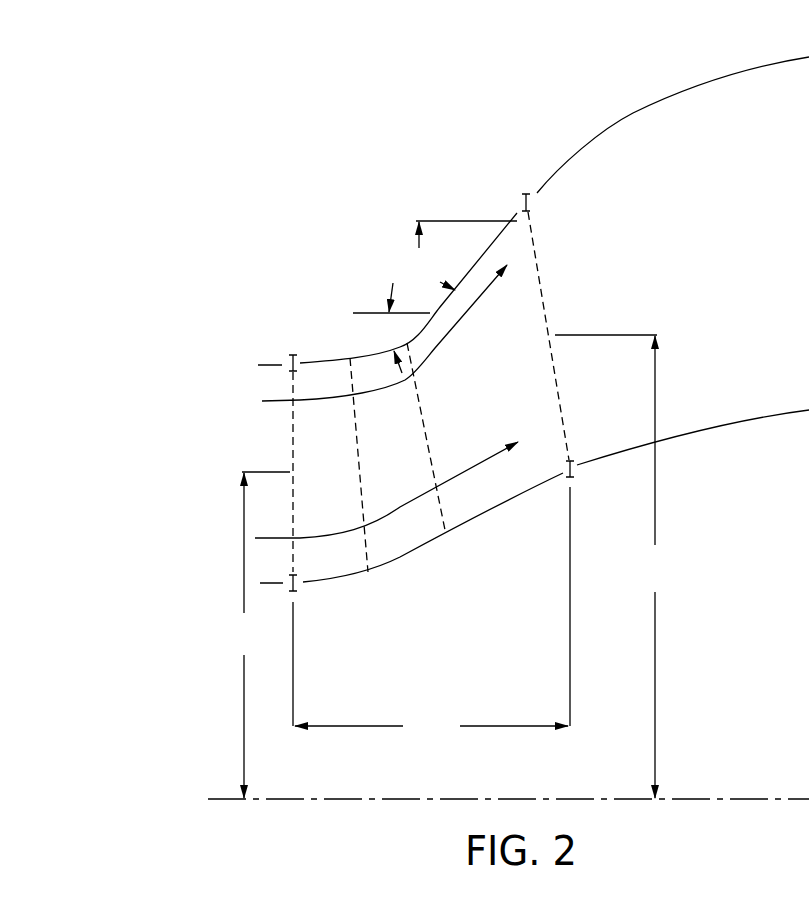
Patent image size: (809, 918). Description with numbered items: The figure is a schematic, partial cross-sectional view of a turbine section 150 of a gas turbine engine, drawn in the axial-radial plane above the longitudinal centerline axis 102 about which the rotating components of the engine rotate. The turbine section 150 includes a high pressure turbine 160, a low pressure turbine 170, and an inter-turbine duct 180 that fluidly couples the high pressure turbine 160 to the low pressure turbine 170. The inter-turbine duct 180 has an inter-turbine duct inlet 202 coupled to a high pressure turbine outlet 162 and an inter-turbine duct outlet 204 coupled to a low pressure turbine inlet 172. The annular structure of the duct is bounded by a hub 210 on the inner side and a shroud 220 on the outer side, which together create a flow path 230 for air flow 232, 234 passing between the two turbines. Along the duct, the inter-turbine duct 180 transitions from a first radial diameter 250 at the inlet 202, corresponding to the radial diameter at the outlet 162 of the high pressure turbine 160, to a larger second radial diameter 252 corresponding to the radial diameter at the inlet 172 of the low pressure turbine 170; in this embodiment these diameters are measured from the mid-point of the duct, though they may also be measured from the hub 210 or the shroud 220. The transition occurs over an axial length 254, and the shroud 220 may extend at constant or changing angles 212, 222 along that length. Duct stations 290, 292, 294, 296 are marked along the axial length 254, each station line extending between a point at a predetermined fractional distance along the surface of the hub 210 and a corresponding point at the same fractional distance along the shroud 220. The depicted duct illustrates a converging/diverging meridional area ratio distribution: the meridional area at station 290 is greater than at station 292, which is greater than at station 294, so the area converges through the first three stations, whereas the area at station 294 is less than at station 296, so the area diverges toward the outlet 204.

The centerline axis 102 is at (710, 798).
The turbine section 150 is at (193, 93).
The high pressure turbine 160 is at (224, 307).
The high pressure turbine outlet 162 is at (175, 428).
The low pressure turbine 170 is at (673, 104).
The low pressure turbine inlet 172 is at (582, 308).
The inter-turbine duct 180 is at (361, 270).
The inter-turbine duct inlet 202 is at (317, 463).
The inter-turbine duct outlet 204 is at (522, 335).
The hub 210 is at (534, 530).
The angle 212 is at (391, 328).
The shroud 220 is at (397, 288).
The angle 222 is at (461, 255).
The flow path 230 is at (545, 427).
The air flow 232 is at (262, 401).
The air flow 234 is at (460, 473).
The first radial diameter 250 is at (254, 635).
The second radial diameter 252 is at (616, 566).
The axial length 254 is at (431, 615).
The duct station 290 is at (290, 415).
The duct station 292 is at (360, 483).
The duct station 294 is at (428, 440).
The duct station 296 is at (542, 300).